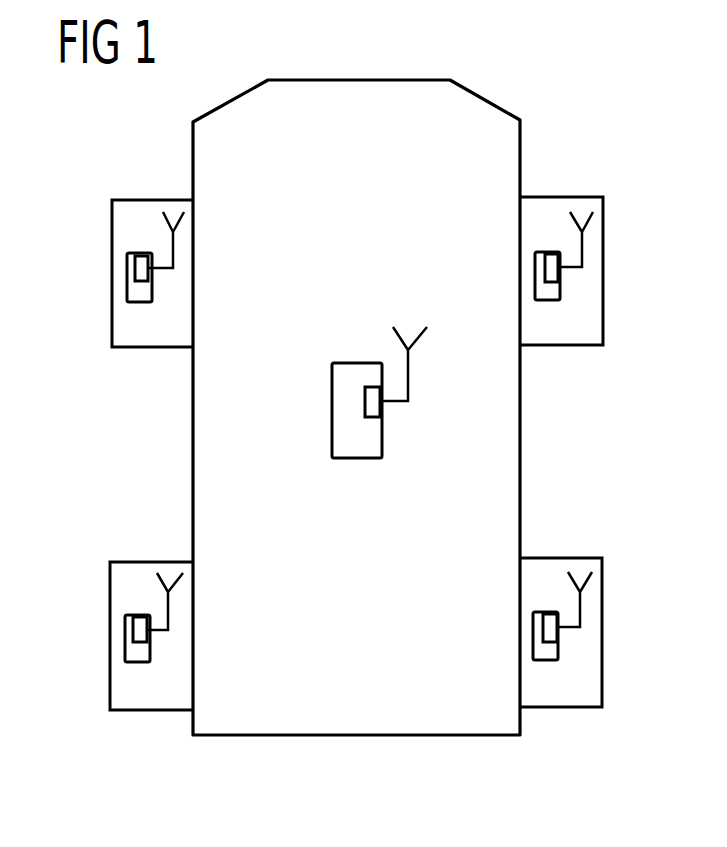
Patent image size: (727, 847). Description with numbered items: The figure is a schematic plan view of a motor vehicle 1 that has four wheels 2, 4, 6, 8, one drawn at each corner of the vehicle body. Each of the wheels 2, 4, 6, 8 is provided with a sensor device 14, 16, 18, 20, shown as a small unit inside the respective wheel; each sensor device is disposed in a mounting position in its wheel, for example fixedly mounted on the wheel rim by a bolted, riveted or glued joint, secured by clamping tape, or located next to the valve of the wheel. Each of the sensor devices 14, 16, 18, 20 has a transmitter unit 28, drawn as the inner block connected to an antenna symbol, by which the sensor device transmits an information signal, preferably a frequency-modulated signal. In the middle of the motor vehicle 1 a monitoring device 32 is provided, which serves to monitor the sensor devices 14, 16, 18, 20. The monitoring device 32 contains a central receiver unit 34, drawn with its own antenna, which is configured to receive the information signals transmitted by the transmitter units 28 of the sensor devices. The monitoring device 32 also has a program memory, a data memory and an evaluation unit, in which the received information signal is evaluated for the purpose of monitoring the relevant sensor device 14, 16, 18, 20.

The motor vehicle 1 is at (500, 470).
The wheel 2 is at (125, 328).
The wheel 4 is at (592, 277).
The wheel 6 is at (590, 638).
The wheel 8 is at (123, 687).
The sensor device 14 is at (133, 266).
The sensor device 16 is at (550, 288).
The sensor device 18 is at (548, 650).
The sensor device 20 is at (135, 652).
The transmitter unit 28 is at (141, 268).
The monitoring device 32 is at (343, 412).
The central receiver unit 34 is at (377, 405).